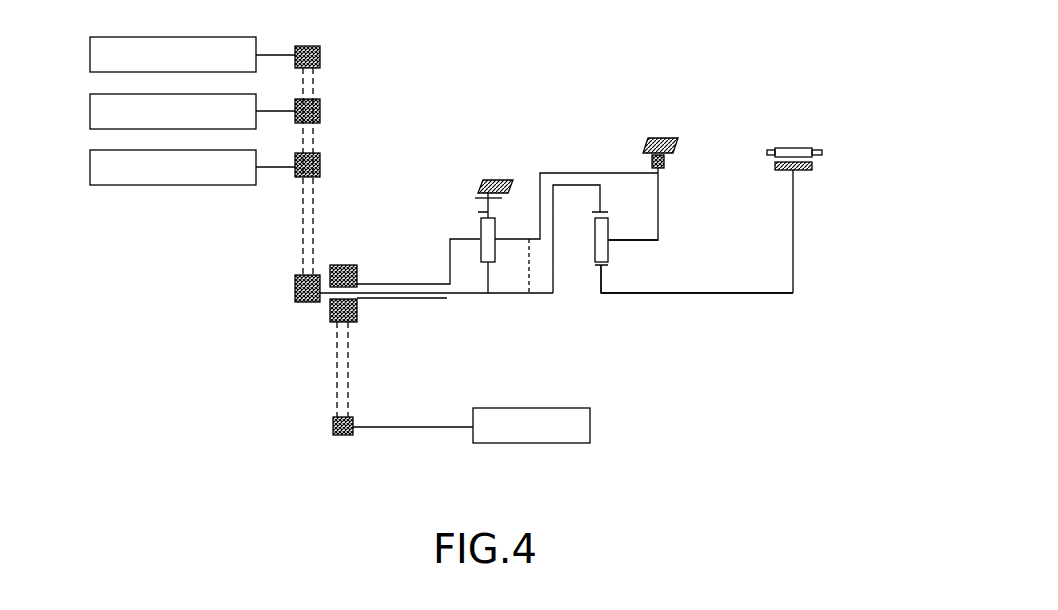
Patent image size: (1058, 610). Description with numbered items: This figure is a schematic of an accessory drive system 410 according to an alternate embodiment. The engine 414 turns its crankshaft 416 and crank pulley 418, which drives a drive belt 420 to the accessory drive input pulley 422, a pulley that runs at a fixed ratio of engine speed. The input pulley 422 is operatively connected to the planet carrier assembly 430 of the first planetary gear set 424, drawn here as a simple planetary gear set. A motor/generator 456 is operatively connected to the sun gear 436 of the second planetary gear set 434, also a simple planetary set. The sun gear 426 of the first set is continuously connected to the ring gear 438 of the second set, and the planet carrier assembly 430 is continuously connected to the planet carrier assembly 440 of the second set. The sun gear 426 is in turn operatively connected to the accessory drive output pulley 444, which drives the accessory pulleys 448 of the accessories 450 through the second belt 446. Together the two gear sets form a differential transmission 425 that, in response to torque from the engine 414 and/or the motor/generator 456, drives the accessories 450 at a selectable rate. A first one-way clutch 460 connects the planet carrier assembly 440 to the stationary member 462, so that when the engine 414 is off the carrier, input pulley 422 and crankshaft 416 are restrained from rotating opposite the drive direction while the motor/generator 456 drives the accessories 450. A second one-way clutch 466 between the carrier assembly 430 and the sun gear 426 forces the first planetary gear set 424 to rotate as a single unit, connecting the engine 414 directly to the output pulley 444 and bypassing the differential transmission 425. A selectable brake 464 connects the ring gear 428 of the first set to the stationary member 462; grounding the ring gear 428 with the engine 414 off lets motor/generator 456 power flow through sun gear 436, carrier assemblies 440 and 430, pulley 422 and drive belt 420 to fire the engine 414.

The accessory drive system 410 is at (795, 55).
The engine 414 is at (562, 445).
The crankshaft 416 is at (415, 428).
The crank pulley 418 is at (333, 422).
The drive belt 420 is at (332, 367).
The accessory drive input pulley 422 is at (348, 264).
The first planetary gear set 424 is at (467, 268).
The differential transmission 425 is at (783, 368).
The sun gear 426 is at (495, 268).
The ring gear 428 is at (488, 213).
The planet carrier assembly 430 is at (463, 238).
The second planetary gear set 434 is at (628, 267).
The sun gear 436 is at (597, 266).
The ring gear 438 is at (604, 211).
The planet carrier assembly 440 is at (633, 241).
The accessory drive output pulley 444 is at (295, 282).
The second belt 446 is at (299, 234).
The accessory pulleys 448 is at (320, 57).
The accessories 450 is at (90, 57).
The motor/generator 456 is at (795, 140).
The first one-way clutch 460 is at (664, 160).
The stationary member 462 is at (493, 178).
The selectable brake 464 is at (497, 201).
The second one-way clutch 466 is at (529, 257).